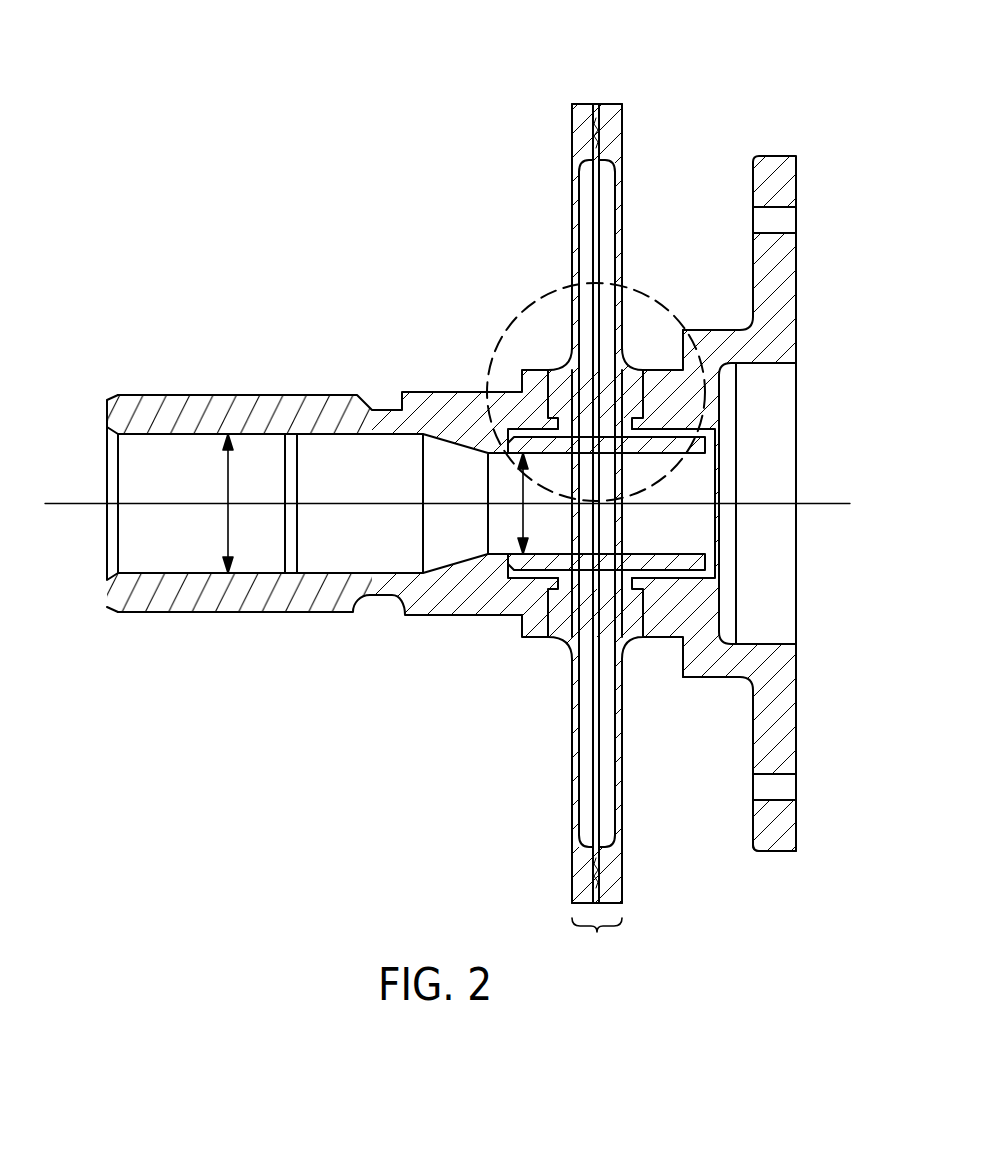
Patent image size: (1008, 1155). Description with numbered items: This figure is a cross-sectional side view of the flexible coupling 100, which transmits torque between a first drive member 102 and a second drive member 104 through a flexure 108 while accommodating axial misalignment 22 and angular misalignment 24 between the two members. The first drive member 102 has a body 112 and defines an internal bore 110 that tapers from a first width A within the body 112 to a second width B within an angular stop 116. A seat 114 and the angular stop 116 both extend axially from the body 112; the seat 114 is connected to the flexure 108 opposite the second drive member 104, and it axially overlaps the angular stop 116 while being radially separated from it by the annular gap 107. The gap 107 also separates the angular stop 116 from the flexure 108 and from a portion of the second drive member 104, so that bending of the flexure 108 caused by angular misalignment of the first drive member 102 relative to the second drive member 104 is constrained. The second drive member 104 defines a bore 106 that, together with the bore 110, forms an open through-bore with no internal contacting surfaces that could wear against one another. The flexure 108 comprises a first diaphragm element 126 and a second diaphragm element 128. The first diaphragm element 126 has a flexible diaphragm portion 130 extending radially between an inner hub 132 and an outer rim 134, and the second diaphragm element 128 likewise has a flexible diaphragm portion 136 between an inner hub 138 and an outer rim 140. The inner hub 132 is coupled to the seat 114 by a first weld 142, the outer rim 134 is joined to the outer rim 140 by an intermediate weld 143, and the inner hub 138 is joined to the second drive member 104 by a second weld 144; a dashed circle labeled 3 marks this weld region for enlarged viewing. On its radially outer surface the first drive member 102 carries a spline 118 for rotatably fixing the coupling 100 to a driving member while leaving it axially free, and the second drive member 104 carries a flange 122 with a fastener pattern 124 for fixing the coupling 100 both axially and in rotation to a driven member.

The flexible coupling 100 is at (260, 747).
The first drive member 102 is at (330, 386).
The second drive member 104 is at (724, 308).
The bore 106 is at (784, 446).
The annular gap 107 is at (673, 432).
The flexure 108 is at (597, 942).
The internal bore 110 is at (341, 554).
The body 112 is at (207, 612).
The seat 114 is at (532, 608).
The angular stop 116 is at (598, 562).
The spline 118 is at (180, 392).
The flange 122 is at (782, 836).
The fastener pattern 124 is at (782, 787).
The first diaphragm element 126 is at (573, 200).
The second diaphragm element 128 is at (621, 200).
The flexible diaphragm portion 130 is at (573, 737).
The inner hub 132 is at (567, 631).
The outer rim 134 is at (583, 878).
The flexible diaphragm portion 136 is at (618, 757).
The inner hub 138 is at (627, 634).
The outer rim 140 is at (612, 892).
The first weld 142 is at (523, 390).
The intermediate weld 143 is at (600, 132).
The second weld 144 is at (646, 388).
The detail circle of FIG. 3 is at (547, 294).
The axial misalignment 22 is at (148, 503).
The angular misalignment 24 is at (761, 504).
The first width A is at (225, 478).
The second width B is at (524, 510).